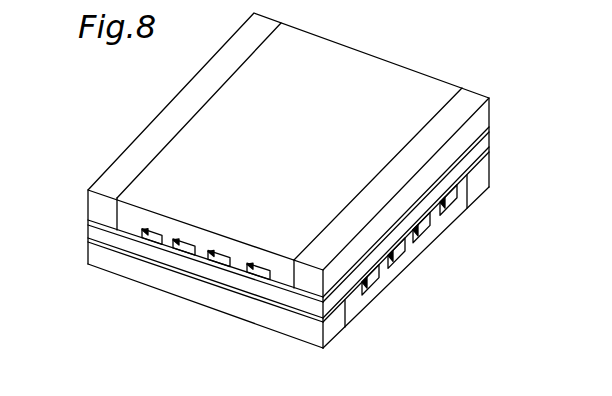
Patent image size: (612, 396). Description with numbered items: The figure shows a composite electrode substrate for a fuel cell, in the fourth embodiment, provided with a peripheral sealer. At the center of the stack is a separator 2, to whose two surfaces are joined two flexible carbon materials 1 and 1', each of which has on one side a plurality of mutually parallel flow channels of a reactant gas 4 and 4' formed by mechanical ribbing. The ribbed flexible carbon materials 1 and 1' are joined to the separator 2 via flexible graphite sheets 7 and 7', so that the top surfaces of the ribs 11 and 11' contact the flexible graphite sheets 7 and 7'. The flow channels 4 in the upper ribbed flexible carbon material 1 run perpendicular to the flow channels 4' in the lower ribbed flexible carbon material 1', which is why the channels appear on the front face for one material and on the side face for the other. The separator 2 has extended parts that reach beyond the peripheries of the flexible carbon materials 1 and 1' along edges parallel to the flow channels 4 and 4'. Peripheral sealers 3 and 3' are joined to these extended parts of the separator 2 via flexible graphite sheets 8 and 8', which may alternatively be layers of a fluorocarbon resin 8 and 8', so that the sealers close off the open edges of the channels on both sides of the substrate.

The flexible carbon material 1 is at (288, 141).
The peripheral sealer 3 is at (320, 155).
The flexible graphite sheet 8 is at (294, 194).
The separator 2 is at (94, 232).
The flexible graphite sheet 8' is at (316, 250).
The peripheral sealer 3' is at (320, 262).
The rib 11 is at (126, 269).
The flexible graphite sheet 7 is at (171, 276).
The flow channel of a reactant gas 4 is at (206, 292).
The flow channel of a reactant gas 4' is at (383, 306).
The flexible graphite sheet 7' is at (419, 260).
The rib 11' is at (452, 236).
The flexible carbon material 1' is at (473, 208).